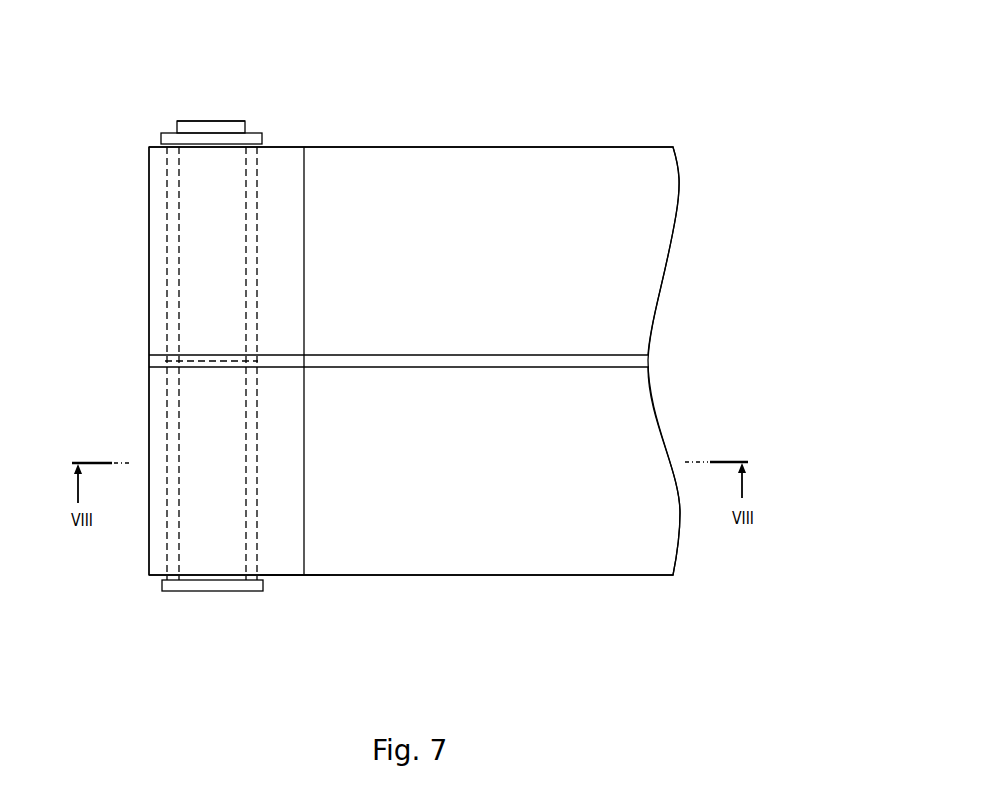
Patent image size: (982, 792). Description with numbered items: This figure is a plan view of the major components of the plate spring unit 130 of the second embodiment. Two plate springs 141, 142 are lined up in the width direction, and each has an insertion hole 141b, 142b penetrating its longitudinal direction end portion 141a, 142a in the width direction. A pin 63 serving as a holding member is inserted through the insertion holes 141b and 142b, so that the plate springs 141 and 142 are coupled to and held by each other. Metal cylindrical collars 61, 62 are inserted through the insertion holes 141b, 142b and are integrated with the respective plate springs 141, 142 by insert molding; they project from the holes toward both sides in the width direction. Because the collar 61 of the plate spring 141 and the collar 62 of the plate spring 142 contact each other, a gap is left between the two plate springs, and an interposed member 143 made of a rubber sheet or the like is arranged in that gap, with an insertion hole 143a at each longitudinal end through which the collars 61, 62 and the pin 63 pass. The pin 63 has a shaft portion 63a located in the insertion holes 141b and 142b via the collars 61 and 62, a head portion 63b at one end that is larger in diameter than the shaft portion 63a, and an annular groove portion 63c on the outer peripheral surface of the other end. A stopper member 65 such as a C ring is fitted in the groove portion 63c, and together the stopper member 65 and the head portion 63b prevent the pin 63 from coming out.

The plate spring unit 130 is at (572, 110).
The plate spring 141 is at (489, 576).
The longitudinal direction end portion 141a is at (292, 576).
The insertion hole 141b is at (167, 532).
The plate spring 142 is at (496, 147).
The longitudinal direction end portion 142a is at (292, 147).
The insertion hole 142b is at (165, 182).
The interposed member 143 is at (592, 358).
The insertion hole 143a is at (167, 362).
The collar 61 is at (165, 418).
The collar 62 is at (165, 237).
The pin 63 is at (192, 120).
The shaft portion 63a is at (230, 491).
The head portion 63b is at (175, 592).
The annular groove portion 63c is at (227, 120).
The stopper member 65 is at (161, 133).